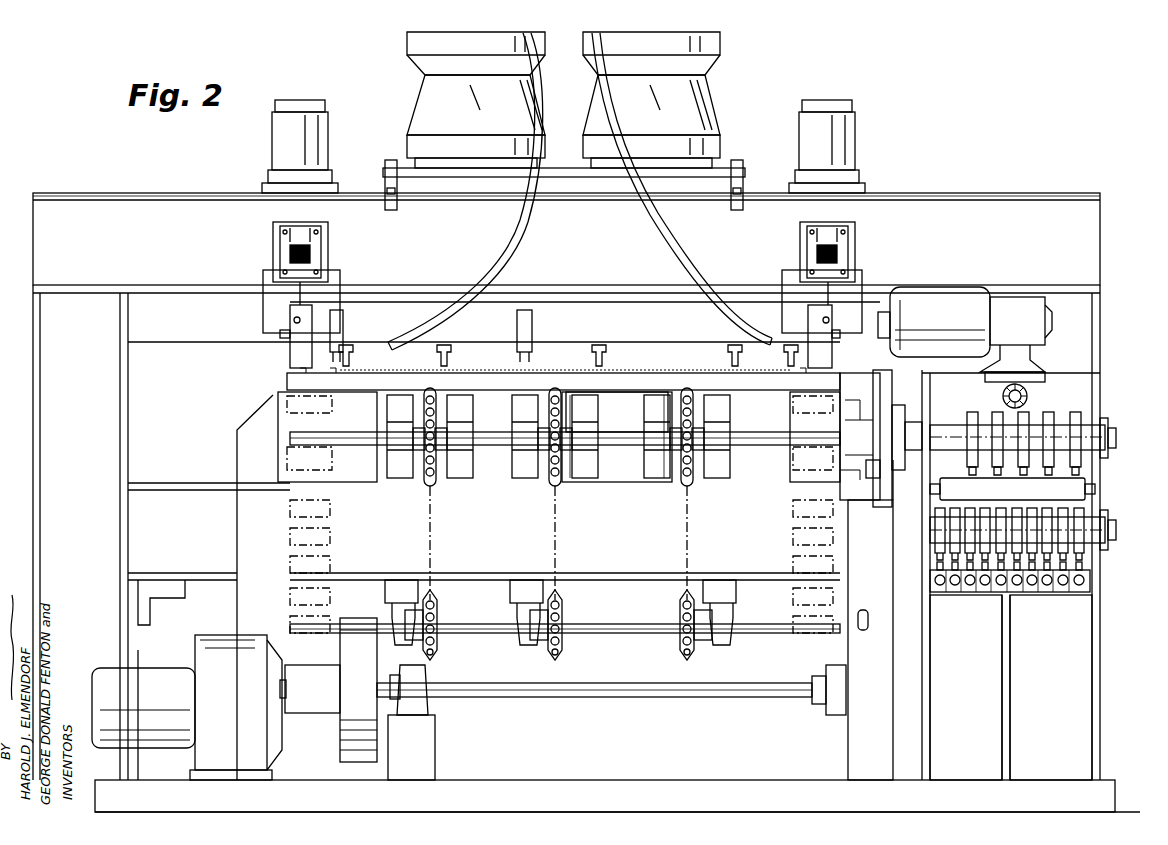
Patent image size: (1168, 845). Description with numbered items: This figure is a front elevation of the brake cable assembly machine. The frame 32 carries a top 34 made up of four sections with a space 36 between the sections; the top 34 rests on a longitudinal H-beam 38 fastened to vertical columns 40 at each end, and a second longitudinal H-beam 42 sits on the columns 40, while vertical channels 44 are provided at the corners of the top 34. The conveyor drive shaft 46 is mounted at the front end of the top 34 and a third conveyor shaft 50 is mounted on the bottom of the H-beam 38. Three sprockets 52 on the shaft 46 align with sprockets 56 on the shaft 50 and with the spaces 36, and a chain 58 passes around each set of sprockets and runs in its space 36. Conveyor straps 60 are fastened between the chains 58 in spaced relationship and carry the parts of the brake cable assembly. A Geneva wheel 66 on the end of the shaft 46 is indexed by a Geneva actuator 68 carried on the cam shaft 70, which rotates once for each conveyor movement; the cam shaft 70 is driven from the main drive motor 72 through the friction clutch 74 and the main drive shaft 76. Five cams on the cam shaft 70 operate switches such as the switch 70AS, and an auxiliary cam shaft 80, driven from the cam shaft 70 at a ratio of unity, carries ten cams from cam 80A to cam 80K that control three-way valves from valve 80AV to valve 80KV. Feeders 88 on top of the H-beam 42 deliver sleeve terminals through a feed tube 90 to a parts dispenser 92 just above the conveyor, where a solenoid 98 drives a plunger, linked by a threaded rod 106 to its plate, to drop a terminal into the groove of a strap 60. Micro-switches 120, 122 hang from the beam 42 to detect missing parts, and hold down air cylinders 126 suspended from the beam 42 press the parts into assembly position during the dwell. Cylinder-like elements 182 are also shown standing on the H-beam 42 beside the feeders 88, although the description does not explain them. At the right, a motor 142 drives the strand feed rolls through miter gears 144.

The frame 32 is at (943, 195).
The top 34 is at (628, 392).
The space 36 is at (570, 414).
The longitudinal H-beam 38 is at (196, 500).
The vertical columns 40 is at (50, 412).
The second longitudinal H-beam 42 is at (180, 212).
The vertical channels 44 is at (240, 600).
The conveyor drive shaft 46 is at (630, 445).
The third conveyor shaft 50 is at (623, 634).
The sprockets 52 is at (436, 416).
The sprockets 56 is at (438, 652).
The chain 58 is at (434, 540).
The conveyor straps 60 is at (372, 376).
The Geneva wheel 66 is at (885, 398).
The Geneva actuator 68 is at (870, 480).
The cam shaft 70 is at (1116, 432).
The switch 70AS is at (1075, 466).
The main drive motor 72 is at (168, 680).
The friction clutch 74 is at (348, 733).
The main drive shaft 76 is at (593, 698).
The auxiliary cam shaft 80 is at (1115, 528).
The cam 80A is at (1085, 516).
The cam 80K is at (938, 518).
The 3-way valve 80KV is at (950, 584).
The 3-way valve 80AV is at (1085, 584).
The feeders 88 is at (420, 104).
The feed tube 90 is at (502, 252).
The parts dispenser 92 is at (283, 356).
The solenoid 98 is at (290, 258).
The threaded rod 106 is at (827, 300).
The micro-switch 120 is at (517, 338).
The micro-switch 122 is at (342, 340).
The hold down air cylinders 126 is at (355, 361).
The motor 142 is at (945, 298).
The miter gears 144 is at (1022, 383).
The air cylinder 182 is at (272, 143).